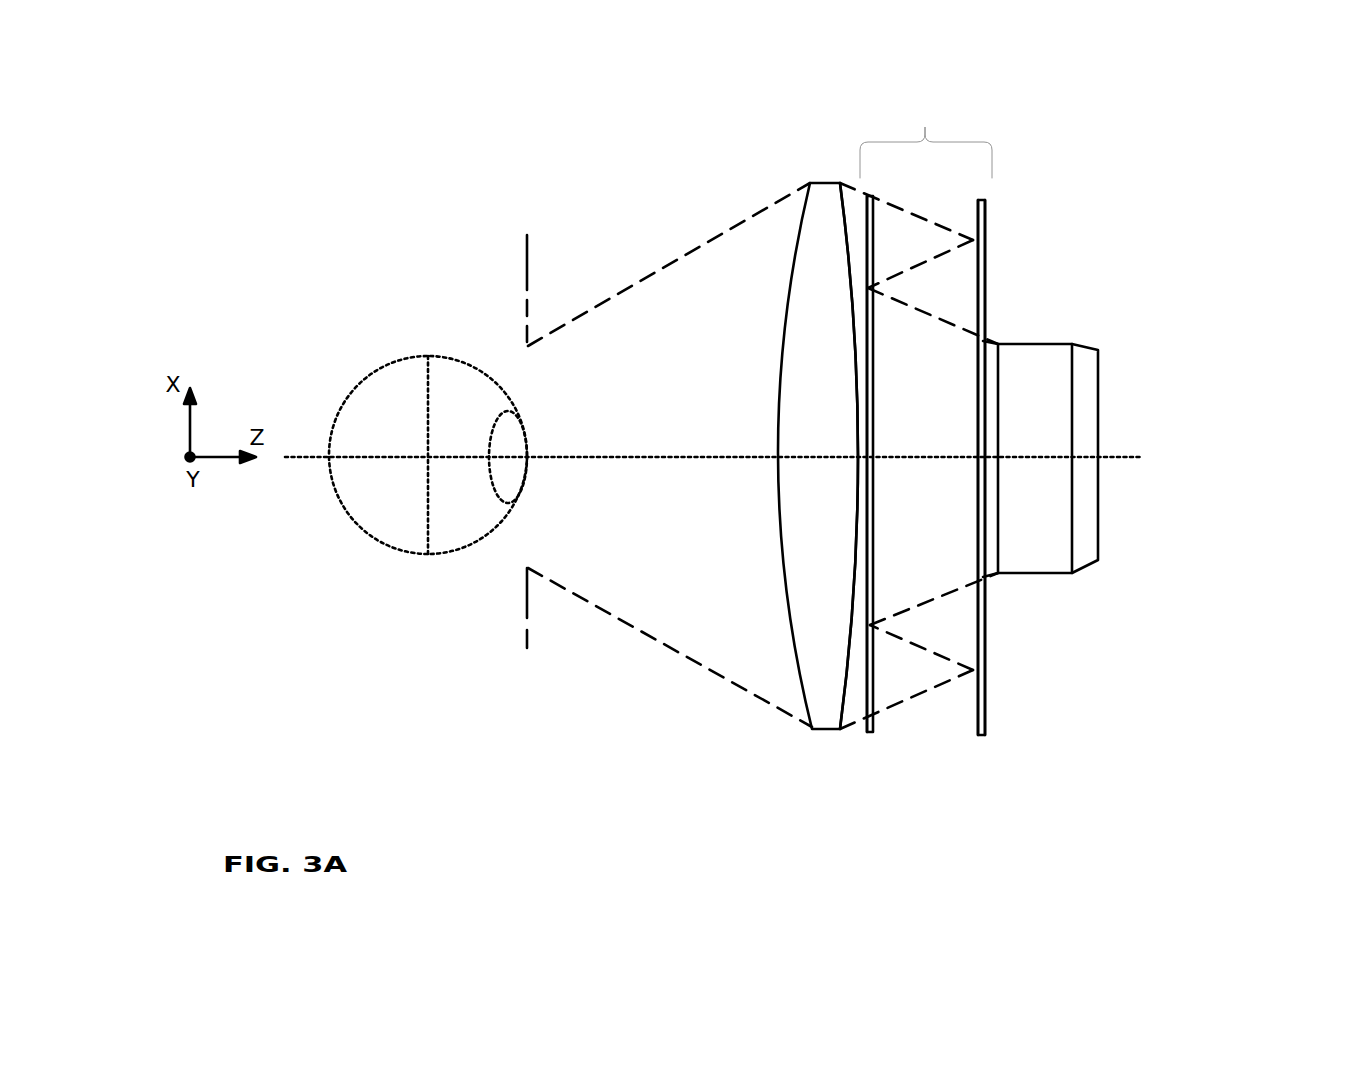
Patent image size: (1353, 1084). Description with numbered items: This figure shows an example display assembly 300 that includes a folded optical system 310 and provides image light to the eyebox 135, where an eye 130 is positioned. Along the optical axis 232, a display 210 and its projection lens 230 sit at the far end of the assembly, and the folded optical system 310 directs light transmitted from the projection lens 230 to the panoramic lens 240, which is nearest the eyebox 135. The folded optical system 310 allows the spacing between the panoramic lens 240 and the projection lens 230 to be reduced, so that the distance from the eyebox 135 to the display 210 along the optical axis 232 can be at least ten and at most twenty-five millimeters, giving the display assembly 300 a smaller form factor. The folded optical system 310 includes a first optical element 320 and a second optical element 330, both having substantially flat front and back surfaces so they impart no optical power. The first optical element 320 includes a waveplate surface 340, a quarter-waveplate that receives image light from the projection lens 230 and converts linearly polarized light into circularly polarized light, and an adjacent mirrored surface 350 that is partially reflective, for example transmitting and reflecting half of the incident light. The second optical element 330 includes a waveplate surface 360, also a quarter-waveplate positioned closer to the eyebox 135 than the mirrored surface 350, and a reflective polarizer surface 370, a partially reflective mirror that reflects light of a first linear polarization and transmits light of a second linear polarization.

The display assembly 300 is at (260, 119).
The eye 130 is at (387, 363).
The eyebox 135 is at (523, 598).
The optical axis 232 is at (1130, 455).
The panoramic lens 240 is at (818, 627).
The reflective polarizer surface 370 is at (850, 722).
The second optical element 330 is at (872, 190).
The waveplate surface 360 is at (885, 718).
The first optical element 320 is at (983, 198).
The mirrored surface 350 is at (975, 715).
The waveplate surface 340 is at (998, 685).
The folded optical system 310 is at (923, 110).
The display 210 is at (1093, 360).
The projection lens 230 is at (1058, 540).